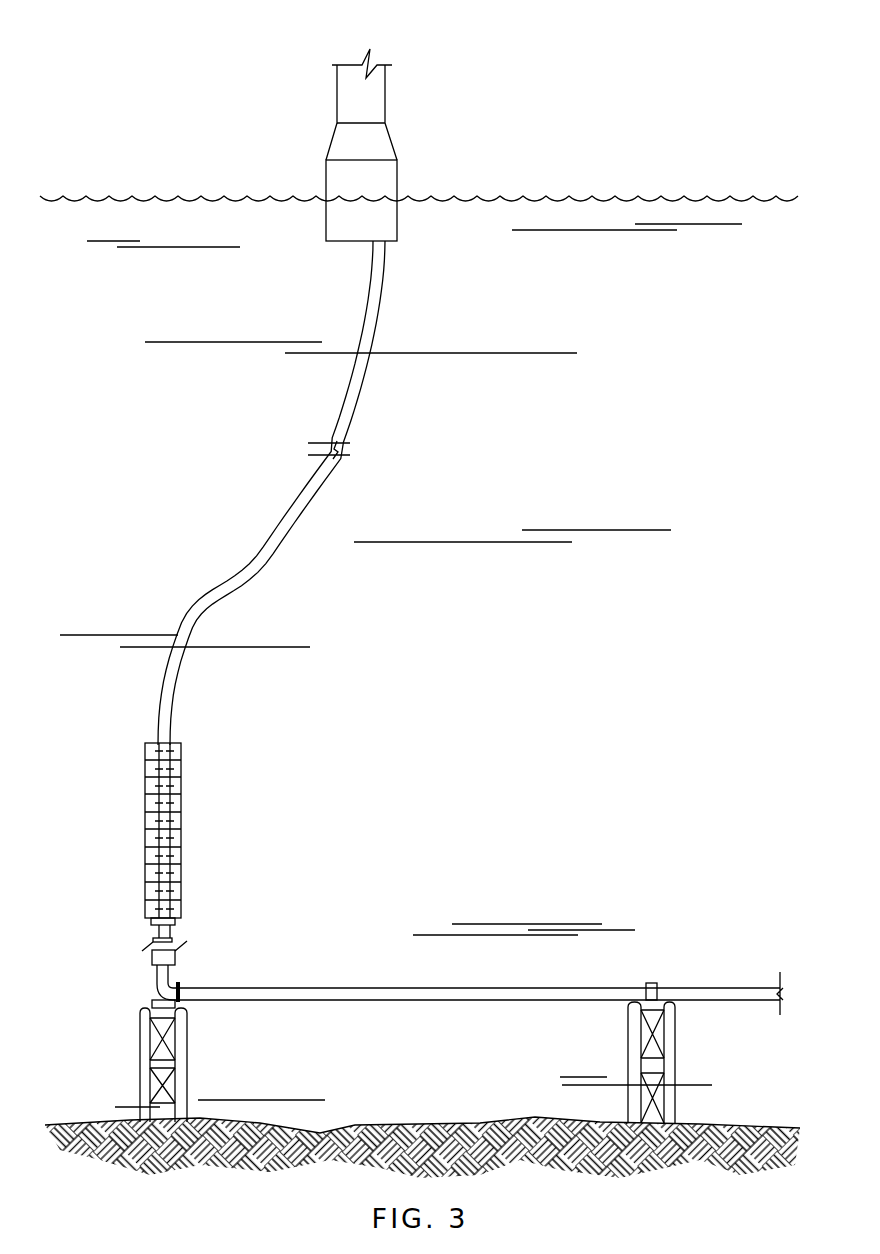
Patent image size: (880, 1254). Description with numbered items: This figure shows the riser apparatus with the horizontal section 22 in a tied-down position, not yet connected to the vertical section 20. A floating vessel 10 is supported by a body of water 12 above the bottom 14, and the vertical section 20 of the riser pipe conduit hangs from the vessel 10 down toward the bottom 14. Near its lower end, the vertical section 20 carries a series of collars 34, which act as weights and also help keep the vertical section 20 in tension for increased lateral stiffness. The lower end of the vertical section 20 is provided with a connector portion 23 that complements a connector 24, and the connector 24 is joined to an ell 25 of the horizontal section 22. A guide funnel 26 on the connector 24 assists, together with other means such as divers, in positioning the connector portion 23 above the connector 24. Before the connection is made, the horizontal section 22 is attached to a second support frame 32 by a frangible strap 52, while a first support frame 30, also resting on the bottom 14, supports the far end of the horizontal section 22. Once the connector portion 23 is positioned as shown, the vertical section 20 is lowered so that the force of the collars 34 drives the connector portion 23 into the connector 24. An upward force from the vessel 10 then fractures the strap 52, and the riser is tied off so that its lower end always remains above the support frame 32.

The floating vessel 10 is at (383, 178).
The body of water 12 is at (630, 324).
The bottom 14 is at (403, 1125).
The vertical section 20 is at (347, 403).
The horizontal section 22 is at (298, 987).
The connector portion 23 is at (172, 938).
The connector 24 is at (152, 957).
The ell 25 is at (158, 990).
The guide funnel 26 is at (145, 946).
The first support frame 30 is at (670, 1075).
The second support frame 32 is at (142, 1062).
The collars 34 is at (178, 748).
The frangible strap 52 is at (180, 984).